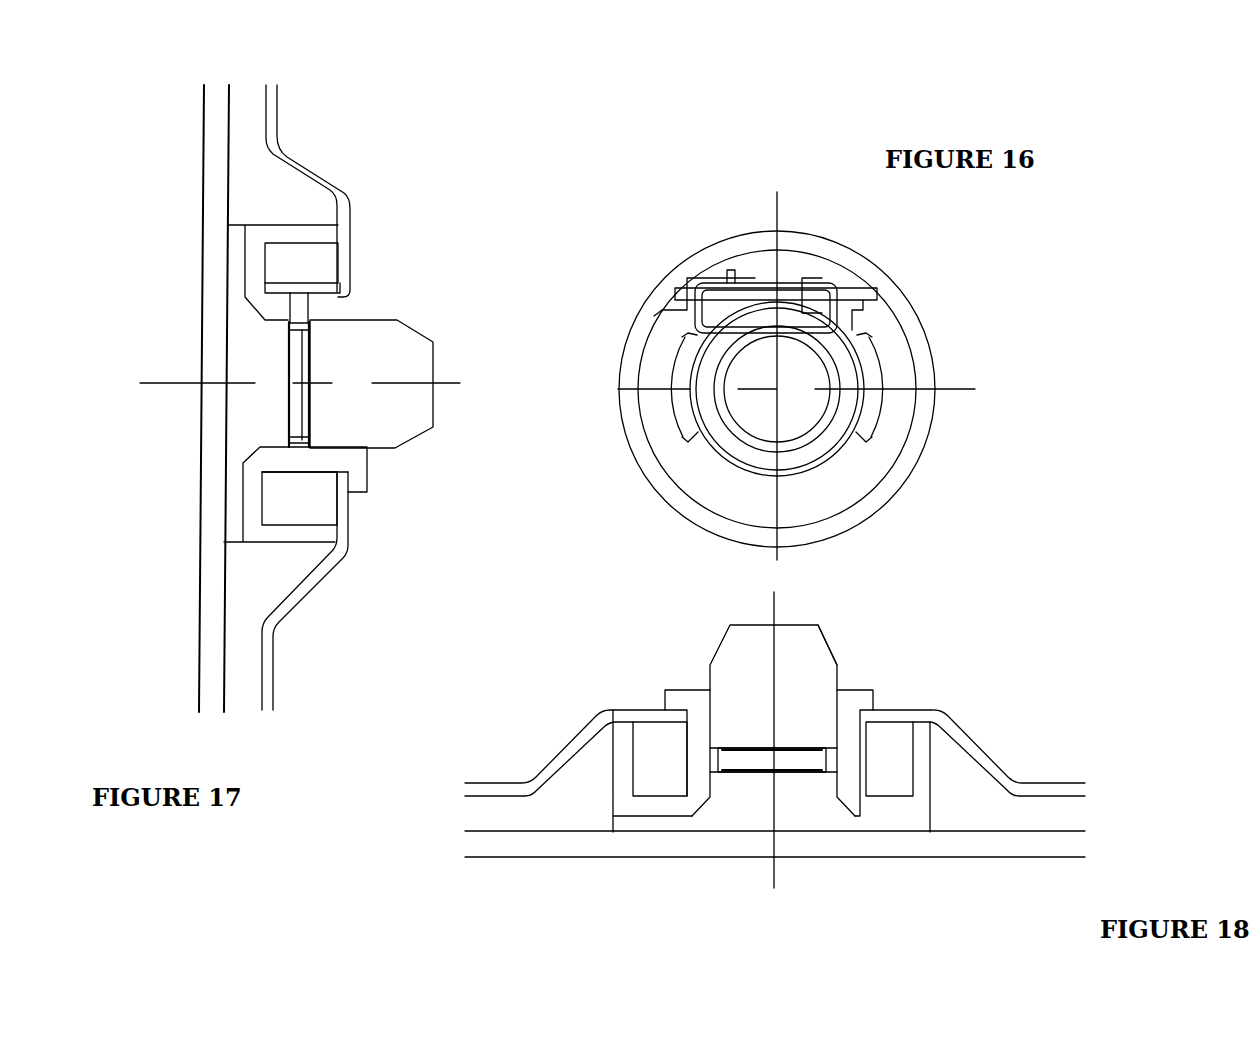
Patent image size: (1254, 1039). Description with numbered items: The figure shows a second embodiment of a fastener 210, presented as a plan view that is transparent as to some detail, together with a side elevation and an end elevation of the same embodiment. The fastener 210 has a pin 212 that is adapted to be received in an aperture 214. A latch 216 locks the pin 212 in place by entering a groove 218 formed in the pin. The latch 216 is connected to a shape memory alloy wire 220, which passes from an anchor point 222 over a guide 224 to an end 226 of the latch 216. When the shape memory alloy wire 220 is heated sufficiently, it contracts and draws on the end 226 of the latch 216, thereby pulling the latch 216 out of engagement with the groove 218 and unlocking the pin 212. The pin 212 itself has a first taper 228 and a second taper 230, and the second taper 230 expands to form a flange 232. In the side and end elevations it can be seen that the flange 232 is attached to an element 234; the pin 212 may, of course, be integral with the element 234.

In FIG. 18, the fastener 210 is at (1078, 688).
In FIG. 17, the pin 212 is at (387, 332).
In FIG. 16, the pin 212 is at (803, 373).
In FIG. 18, the pin 212 is at (747, 655).
In FIG. 17, the aperture 214 is at (323, 305).
In FIG. 16, the aperture 214 is at (827, 427).
In FIG. 18, the aperture 214 is at (708, 690).
In FIG. 17, the latch 216 is at (297, 310).
In FIG. 16, the latch 216 is at (720, 332).
In FIG. 17, the groove 218 is at (297, 404).
In FIG. 18, the groove 218 is at (733, 763).
In FIG. 16, the shape memory alloy wire 220 is at (758, 275).
In FIG. 16, the anchor point 222 is at (730, 275).
In FIG. 16, the guide 224 is at (810, 285).
In FIG. 16, the end of latch 226 is at (843, 330).
In FIG. 18, the first taper 228 is at (825, 635).
In FIG. 18, the second taper 230 is at (842, 805).
In FIG. 18, the flange 232 is at (908, 825).
In FIG. 17, the element 234 is at (210, 514).
In FIG. 16, the element 234 is at (777, 389).
In FIG. 18, the element 234 is at (1032, 848).